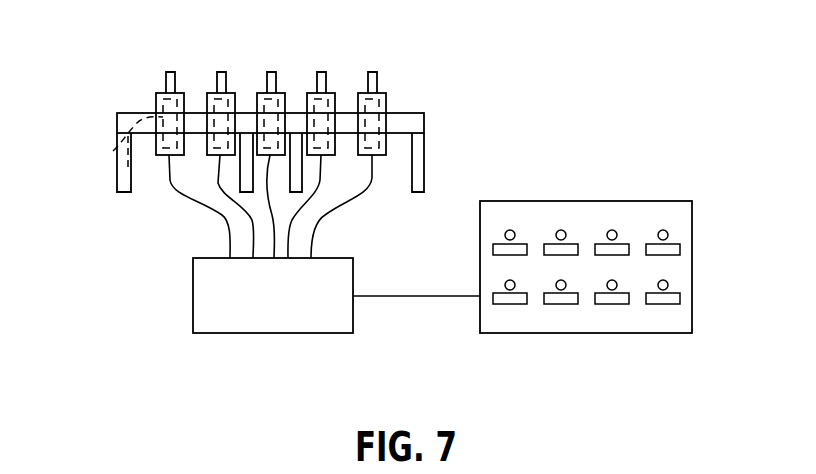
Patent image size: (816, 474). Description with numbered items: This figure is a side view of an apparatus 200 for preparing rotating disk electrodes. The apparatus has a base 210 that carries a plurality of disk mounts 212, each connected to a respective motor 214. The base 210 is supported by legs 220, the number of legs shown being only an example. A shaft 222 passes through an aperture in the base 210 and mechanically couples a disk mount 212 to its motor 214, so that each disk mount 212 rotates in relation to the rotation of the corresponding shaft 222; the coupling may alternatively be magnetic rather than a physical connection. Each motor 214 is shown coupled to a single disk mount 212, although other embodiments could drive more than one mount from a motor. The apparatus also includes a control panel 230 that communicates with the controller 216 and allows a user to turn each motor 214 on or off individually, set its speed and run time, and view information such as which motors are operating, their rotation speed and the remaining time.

The apparatus 200 is at (88, 93).
The base 210 is at (424, 117).
The disk mount 212 is at (387, 103).
The motor 214 is at (156, 156).
The controller 216 is at (270, 313).
The legs 220 is at (424, 160).
The shaft 222 is at (113, 151).
The control panel 230 is at (678, 272).